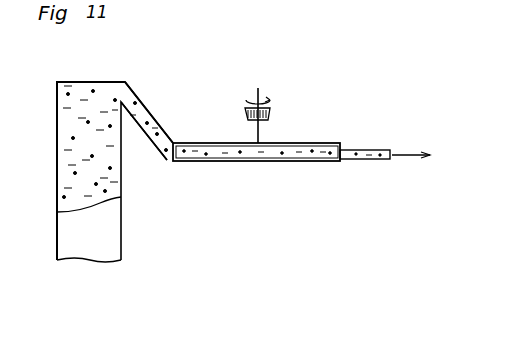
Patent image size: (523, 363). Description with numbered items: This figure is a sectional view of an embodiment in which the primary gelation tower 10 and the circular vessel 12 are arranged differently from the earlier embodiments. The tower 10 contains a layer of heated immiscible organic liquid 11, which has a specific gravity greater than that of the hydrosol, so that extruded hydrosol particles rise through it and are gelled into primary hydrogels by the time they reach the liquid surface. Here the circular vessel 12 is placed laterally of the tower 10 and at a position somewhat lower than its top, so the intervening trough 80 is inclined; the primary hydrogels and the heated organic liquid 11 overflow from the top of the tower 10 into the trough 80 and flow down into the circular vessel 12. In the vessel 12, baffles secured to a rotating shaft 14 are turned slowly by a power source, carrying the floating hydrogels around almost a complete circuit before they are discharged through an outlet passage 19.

The primary gelation tower 10 is at (122, 220).
The immiscible organic liquid 11 is at (101, 187).
The circular vessel 12 is at (315, 163).
The rotating shaft 14 is at (262, 140).
The outlet passage 19 is at (360, 150).
The trough 80 is at (148, 112).